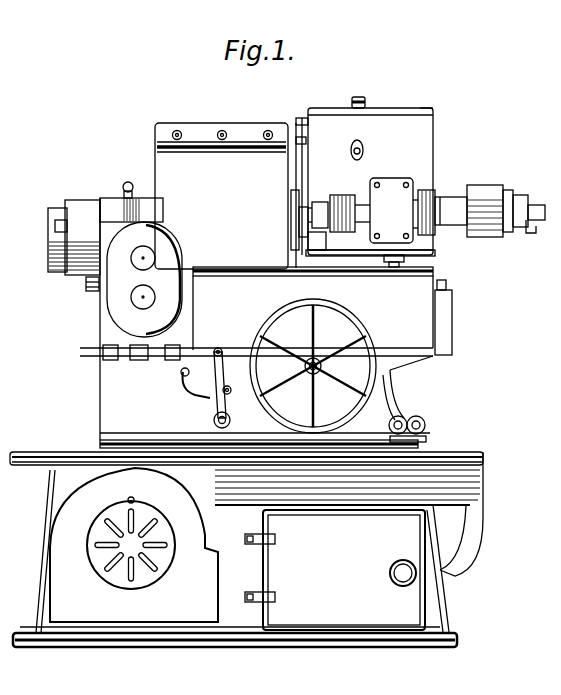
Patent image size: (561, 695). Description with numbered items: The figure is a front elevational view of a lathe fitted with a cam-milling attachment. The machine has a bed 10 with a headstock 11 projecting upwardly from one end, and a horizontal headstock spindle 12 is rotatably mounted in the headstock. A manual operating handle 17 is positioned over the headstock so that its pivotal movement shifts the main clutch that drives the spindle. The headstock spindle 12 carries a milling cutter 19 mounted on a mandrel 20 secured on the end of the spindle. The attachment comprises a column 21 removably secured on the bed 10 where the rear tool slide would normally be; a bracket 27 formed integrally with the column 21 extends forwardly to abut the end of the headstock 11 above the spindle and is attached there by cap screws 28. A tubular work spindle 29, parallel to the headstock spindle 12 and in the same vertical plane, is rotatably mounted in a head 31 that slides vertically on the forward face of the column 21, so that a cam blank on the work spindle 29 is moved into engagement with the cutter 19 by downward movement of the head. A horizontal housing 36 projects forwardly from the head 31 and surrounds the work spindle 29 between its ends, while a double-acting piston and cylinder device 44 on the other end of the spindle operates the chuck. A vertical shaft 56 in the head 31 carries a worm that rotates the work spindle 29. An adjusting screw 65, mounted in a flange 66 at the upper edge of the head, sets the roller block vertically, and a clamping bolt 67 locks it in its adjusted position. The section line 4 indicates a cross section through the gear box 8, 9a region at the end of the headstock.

The section line 4- 4 is at (62, 232).
The cylinder housing 8 is at (74, 254).
The gear 9a is at (75, 276).
The bed 10 is at (403, 383).
The headstock 11 is at (247, 221).
The headstock spindle 12 is at (299, 212).
The manual operating handle 17 is at (124, 187).
The milling cutter 19 is at (322, 240).
The mandrel 20 is at (314, 234).
The column 21 is at (438, 257).
The bracket 27 is at (292, 134).
The cap screws 28 is at (306, 140).
The work spindle 29 is at (328, 196).
The head 31 is at (418, 140).
The horizontal housing 36 is at (360, 196).
The double-acting piston and cylinder device 44 is at (510, 181).
The vertical shaft 56 is at (396, 262).
The adjusting screw 65 is at (366, 100).
The flange 66 is at (428, 111).
The clamping bolt 67 is at (364, 152).